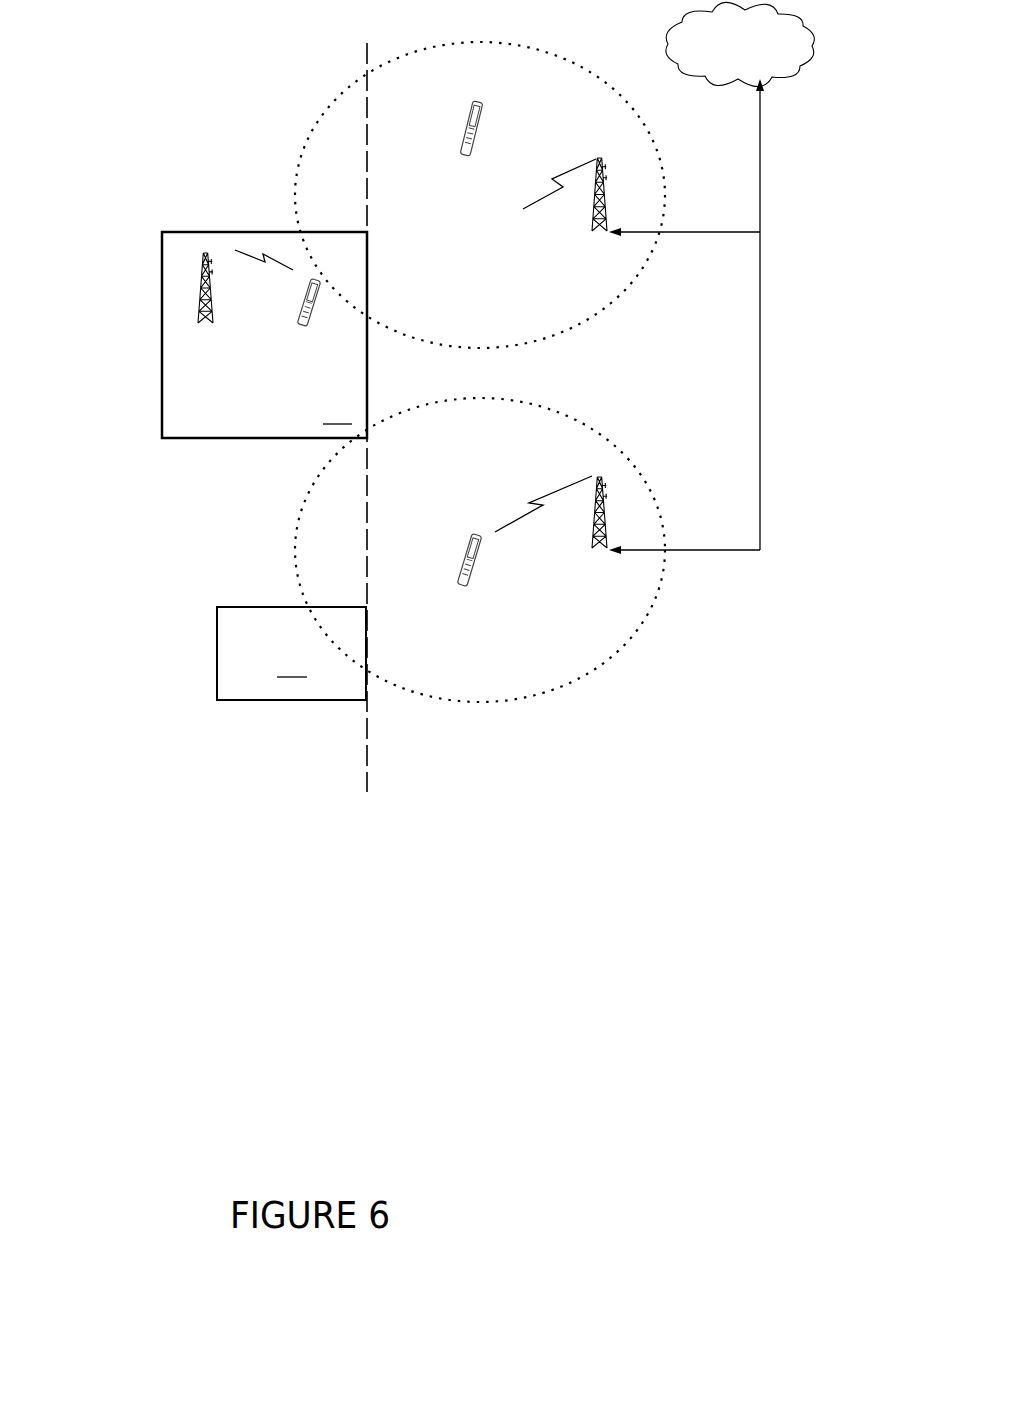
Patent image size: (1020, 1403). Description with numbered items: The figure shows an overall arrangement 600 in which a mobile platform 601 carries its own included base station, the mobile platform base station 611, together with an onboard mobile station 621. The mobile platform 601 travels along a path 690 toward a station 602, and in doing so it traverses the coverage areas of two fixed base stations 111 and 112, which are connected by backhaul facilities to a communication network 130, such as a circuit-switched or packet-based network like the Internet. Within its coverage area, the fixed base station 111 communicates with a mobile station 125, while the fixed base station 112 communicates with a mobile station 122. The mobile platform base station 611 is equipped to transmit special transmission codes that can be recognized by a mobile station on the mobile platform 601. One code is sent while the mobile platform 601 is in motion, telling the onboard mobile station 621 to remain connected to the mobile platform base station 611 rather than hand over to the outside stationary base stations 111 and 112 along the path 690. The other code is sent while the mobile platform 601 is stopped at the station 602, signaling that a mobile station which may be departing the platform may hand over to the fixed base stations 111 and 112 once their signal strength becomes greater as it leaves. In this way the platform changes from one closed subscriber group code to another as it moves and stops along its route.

The communication network 130 is at (672, 40).
The mobile station 125 is at (462, 148).
The base station 111 is at (590, 232).
The base station 112 is at (590, 534).
The mobile station 122 is at (478, 559).
The mobile platform base station 611 is at (213, 307).
The onboard mobile station 621 is at (313, 328).
The mobile platform 601 is at (264, 335).
The station 602 is at (291, 653).
The path 690 is at (367, 757).
The communication system 600 is at (167, 851).